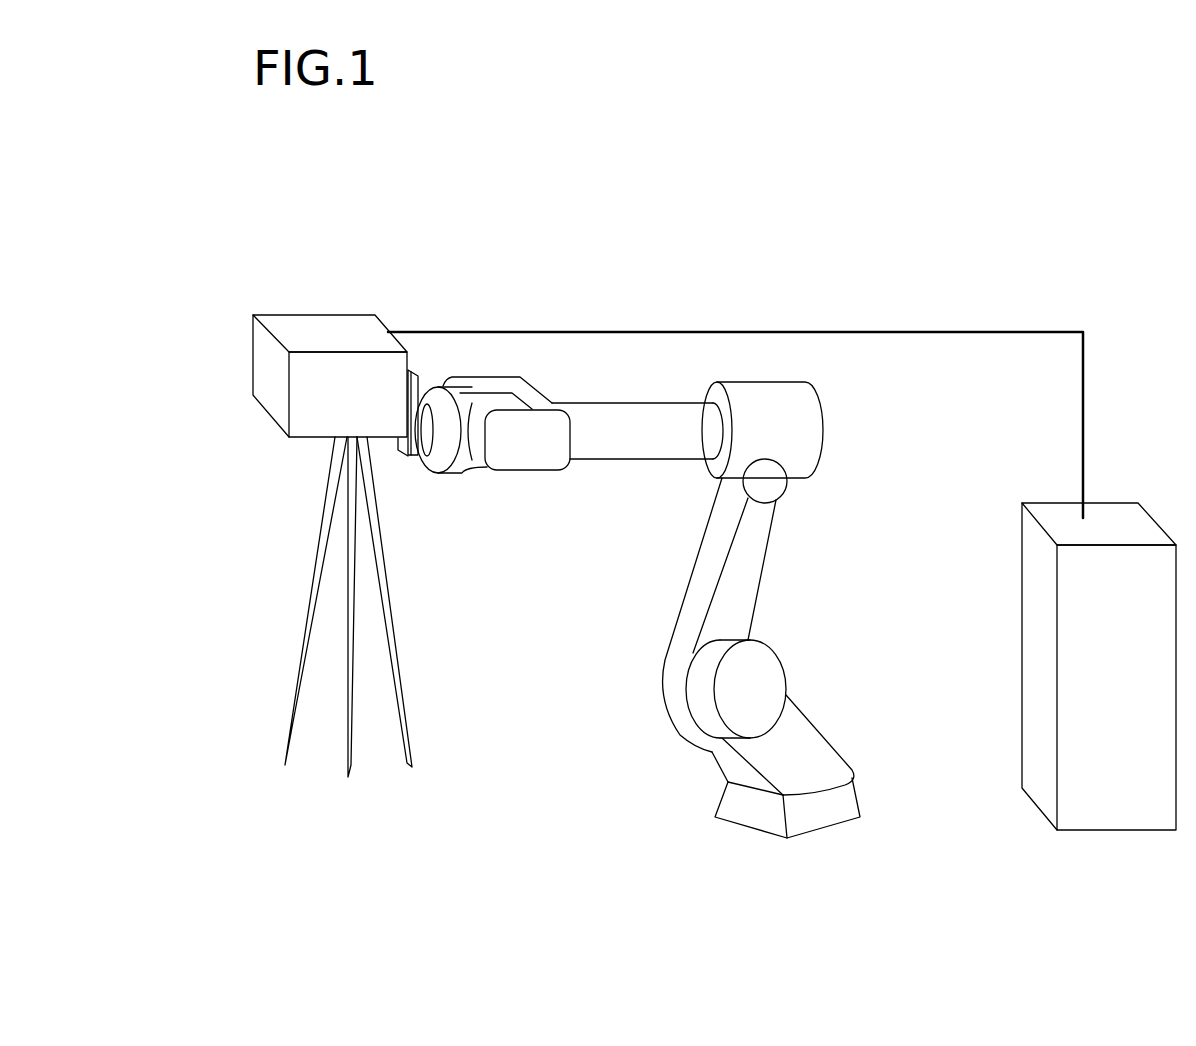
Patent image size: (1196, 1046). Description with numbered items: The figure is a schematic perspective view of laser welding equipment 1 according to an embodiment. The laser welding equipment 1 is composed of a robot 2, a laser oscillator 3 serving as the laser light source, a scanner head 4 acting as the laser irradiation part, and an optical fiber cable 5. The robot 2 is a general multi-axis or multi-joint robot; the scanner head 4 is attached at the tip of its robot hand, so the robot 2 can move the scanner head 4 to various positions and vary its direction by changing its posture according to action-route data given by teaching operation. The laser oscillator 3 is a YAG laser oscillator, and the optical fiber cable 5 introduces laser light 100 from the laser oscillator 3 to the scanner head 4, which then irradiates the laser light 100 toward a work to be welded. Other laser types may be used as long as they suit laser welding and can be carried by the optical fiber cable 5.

The laser welding equipment 1 is at (280, 143).
The robot 2 is at (625, 460).
The laser oscillator 3 is at (1122, 512).
The scanner head 4 is at (315, 325).
The optical fiber cable 5 is at (716, 331).
The laser light 100 is at (393, 627).